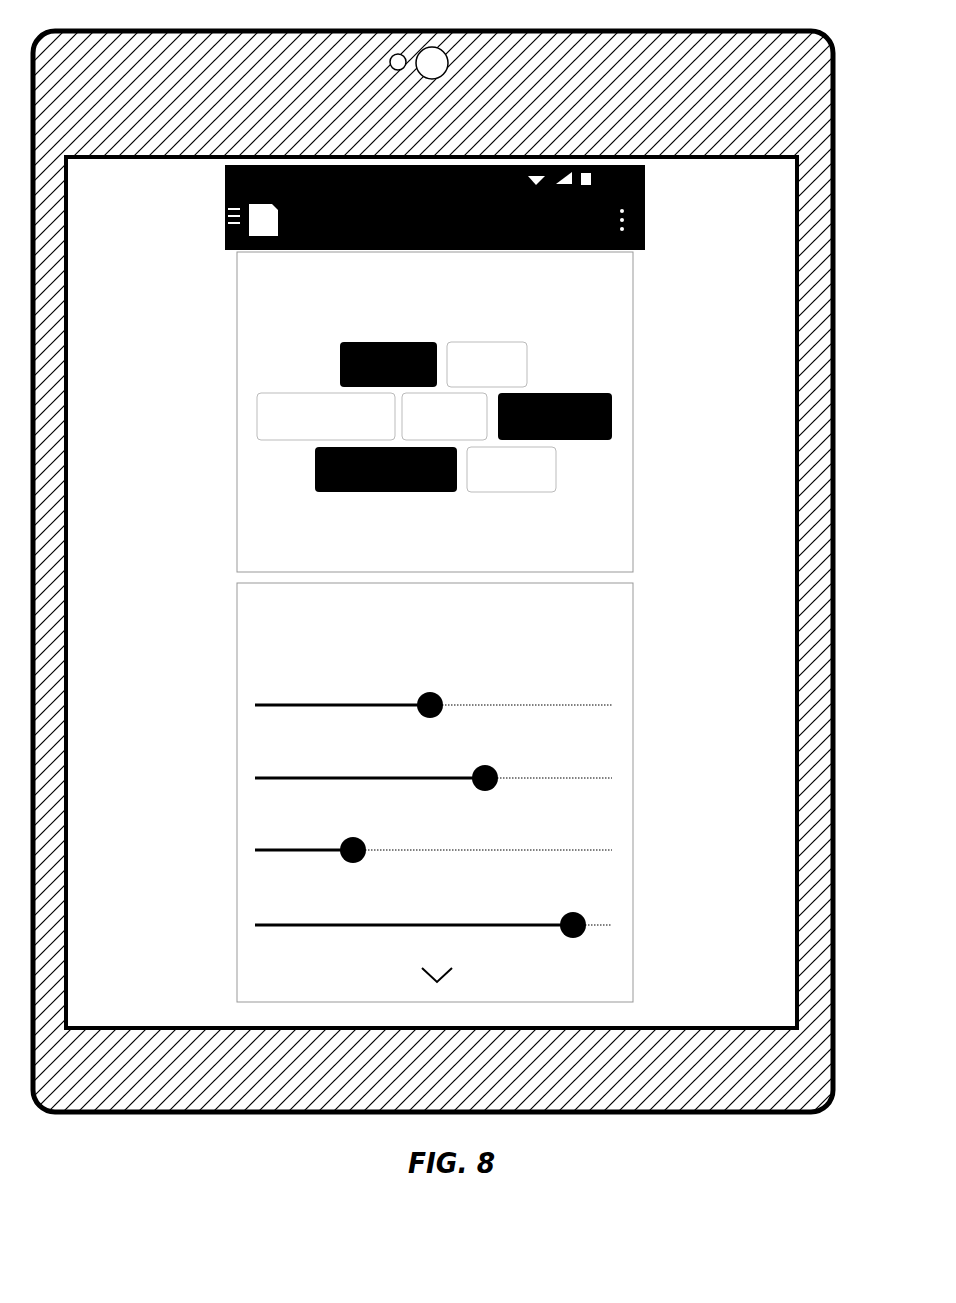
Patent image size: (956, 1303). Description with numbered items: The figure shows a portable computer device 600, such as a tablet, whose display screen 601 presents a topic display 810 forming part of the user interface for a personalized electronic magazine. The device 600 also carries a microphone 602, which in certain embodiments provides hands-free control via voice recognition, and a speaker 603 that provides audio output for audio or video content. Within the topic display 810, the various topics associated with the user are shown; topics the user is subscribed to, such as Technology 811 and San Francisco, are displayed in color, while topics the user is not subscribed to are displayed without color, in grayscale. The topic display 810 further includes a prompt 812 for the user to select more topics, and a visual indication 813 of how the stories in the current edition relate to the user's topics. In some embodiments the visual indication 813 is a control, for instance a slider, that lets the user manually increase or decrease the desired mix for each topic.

The portable computer device 600 is at (771, 1168).
The display screen 601 is at (782, 191).
The microphone 602 is at (383, 75).
The speaker 603 is at (449, 71).
The topic display 810 is at (448, 583).
The Technology topic 811 is at (480, 412).
The prompt 812 is at (513, 530).
The visual indication 813 is at (627, 667).